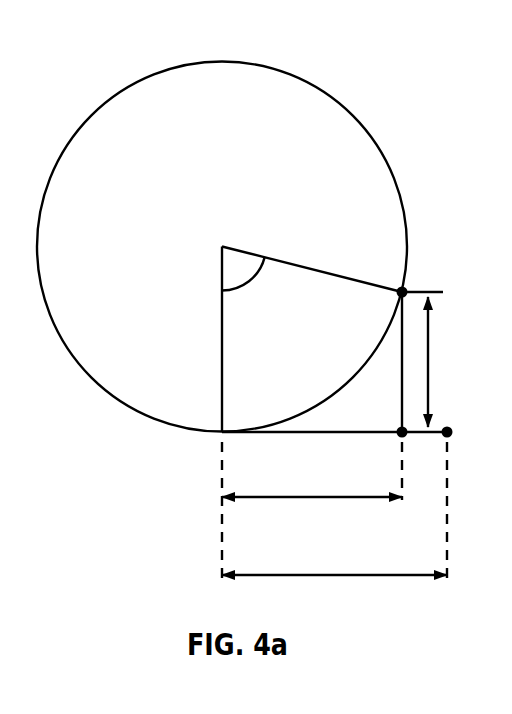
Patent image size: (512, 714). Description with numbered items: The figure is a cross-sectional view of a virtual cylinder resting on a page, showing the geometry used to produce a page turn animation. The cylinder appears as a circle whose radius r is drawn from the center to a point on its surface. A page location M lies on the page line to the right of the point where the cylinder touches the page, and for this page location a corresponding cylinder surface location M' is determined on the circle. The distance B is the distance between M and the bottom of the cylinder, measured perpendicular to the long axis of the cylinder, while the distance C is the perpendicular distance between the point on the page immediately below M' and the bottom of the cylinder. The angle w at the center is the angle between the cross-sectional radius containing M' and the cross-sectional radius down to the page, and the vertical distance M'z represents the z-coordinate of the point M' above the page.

The radius of the virtual cylinder r is at (312, 268).
The angle between cross-sectional radii w is at (243, 273).
The cylinder surface location M' is at (419, 281).
The page location M is at (439, 436).
The z-coordinate of the point M' M'z is at (439, 359).
The perpendicular distance from the point below M' to the bottom of the cylinder C is at (312, 484).
The distance between M and the bottom of the cylinder B is at (334, 562).